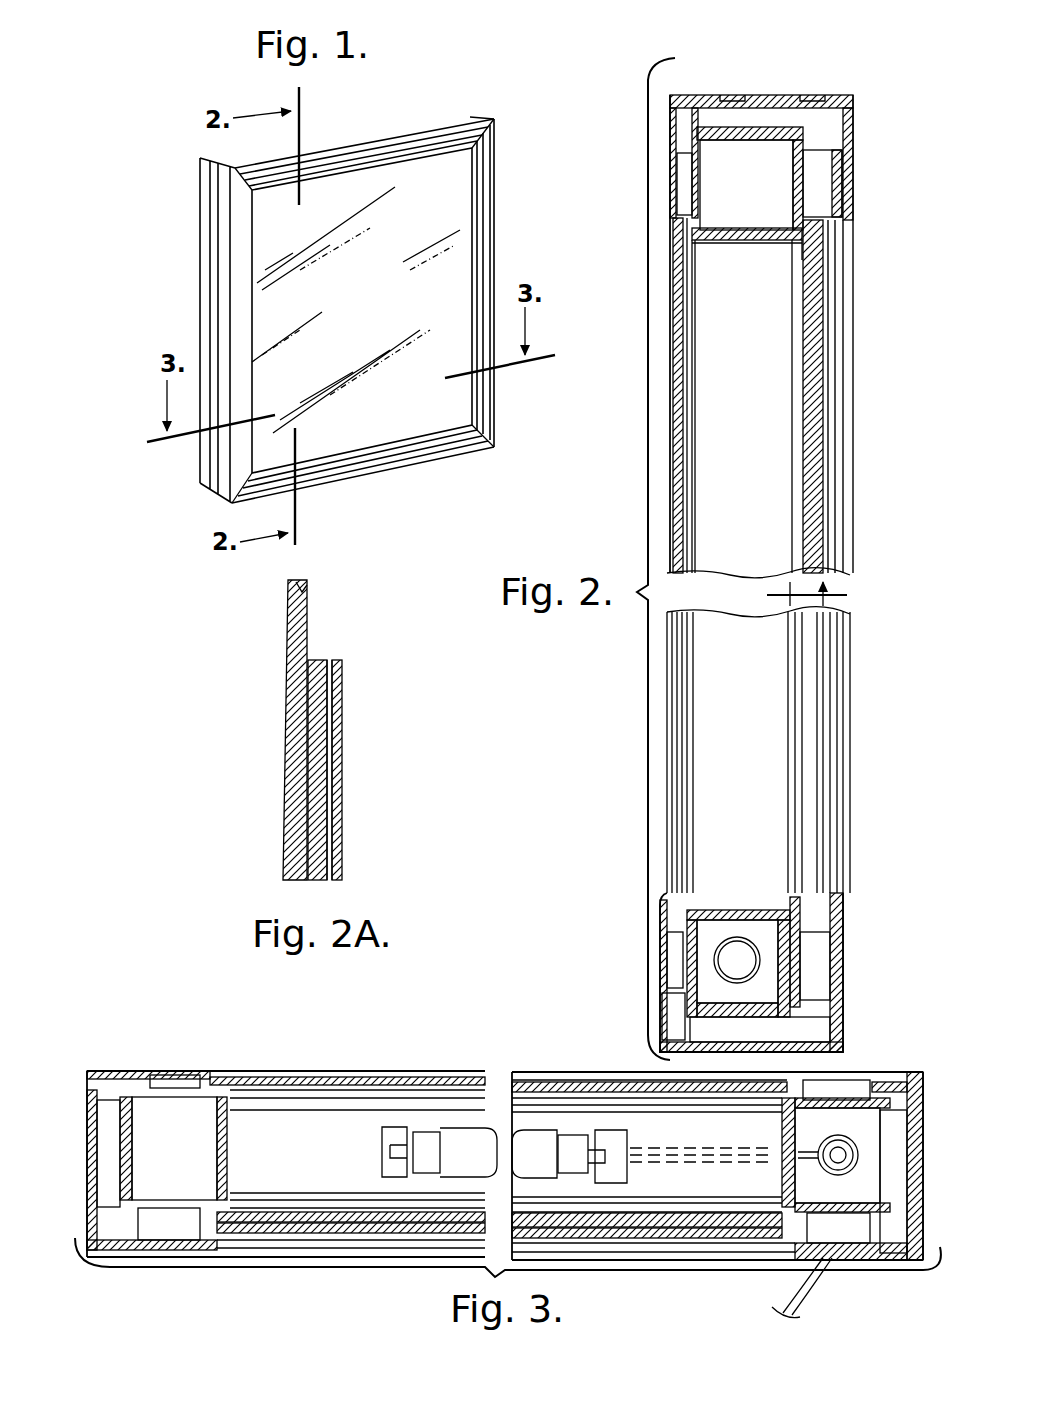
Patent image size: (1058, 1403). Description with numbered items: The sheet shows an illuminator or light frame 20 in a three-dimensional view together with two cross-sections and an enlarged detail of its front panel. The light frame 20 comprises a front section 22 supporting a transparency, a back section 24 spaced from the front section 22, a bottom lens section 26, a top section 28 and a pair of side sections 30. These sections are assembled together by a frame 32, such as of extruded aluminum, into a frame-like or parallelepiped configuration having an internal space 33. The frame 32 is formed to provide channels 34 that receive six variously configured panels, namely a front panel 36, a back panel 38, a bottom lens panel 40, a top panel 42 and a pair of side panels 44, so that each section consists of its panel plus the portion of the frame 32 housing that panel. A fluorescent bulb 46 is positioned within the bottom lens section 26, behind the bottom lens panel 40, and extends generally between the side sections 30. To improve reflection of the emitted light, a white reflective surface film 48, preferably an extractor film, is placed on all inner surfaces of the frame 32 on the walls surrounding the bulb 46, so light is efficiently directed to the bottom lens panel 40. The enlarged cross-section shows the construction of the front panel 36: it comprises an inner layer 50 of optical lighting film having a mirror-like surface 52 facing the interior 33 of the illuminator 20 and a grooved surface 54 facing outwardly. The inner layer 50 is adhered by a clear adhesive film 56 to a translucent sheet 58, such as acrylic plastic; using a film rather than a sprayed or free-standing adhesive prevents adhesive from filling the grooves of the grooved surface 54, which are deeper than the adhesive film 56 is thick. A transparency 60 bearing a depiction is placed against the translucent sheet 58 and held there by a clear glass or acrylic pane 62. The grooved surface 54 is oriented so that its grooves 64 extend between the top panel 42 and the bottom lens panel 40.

In FIG. 1, the illuminator or light frame 20 is at (339, 289).
In FIG. 2, the illuminator or light frame 20 is at (755, 548).
In FIG. 3, the illuminator or light frame 20 is at (511, 1167).
In FIG. 1, the front section 22 is at (373, 309).
In FIG. 2, the front section 22 is at (860, 387).
In FIG. 3, the front section 22 is at (364, 1260).
In FIG. 2, the back section 24 is at (666, 429).
In FIG. 3, the back section 24 is at (439, 1070).
In FIG. 1, the bottom lens section 26 is at (417, 472).
In FIG. 2, the bottom lens section 26 is at (755, 1063).
In FIG. 1, the top section 28 is at (357, 133).
In FIG. 2, the top section 28 is at (759, 92).
In FIG. 1, the side sections 30 is at (197, 230).
In FIG. 2, the side sections 30 is at (758, 811).
In FIG. 3, the side sections 30 is at (104, 1172).
In FIG. 2, the frame 32 is at (656, 974).
In FIG. 3, the frame 32 is at (150, 1072).
In FIG. 2, the internal space 33 is at (750, 501).
In FIG. 2, the channels 34 is at (787, 227).
In FIG. 3, the channels 34 is at (230, 1080).
In FIG. 2, the front panel 36 is at (803, 365).
In FIG. 2A, the front panel 36 is at (369, 765).
In FIG. 3, the front panel 36 is at (307, 1213).
In FIG. 2, the back panel 38 is at (692, 470).
In FIG. 3, the back panel 38 is at (292, 1097).
In FIG. 2, the bottom lens panel 40 is at (734, 912).
In FIG. 2, the top panel 42 is at (740, 247).
In FIG. 2, the side panels 44 is at (720, 727).
In FIG. 3, the side panels 44 is at (257, 1163).
In FIG. 2, the fluorescent bulb 46 is at (737, 960).
In FIG. 3, the fluorescent bulb 46 is at (481, 1164).
In FIG. 2, the white reflective surface film 48 is at (703, 948).
In FIG. 3, the white reflective surface film 48 is at (686, 1189).
In FIG. 2A, the inner layer of SOLF 50 is at (353, 640).
In FIG. 2A, the mirror-like surface 52 is at (287, 813).
In FIG. 2A, the grooved surface 54 is at (314, 592).
In FIG. 2A, the clear adhesive film 56 is at (330, 867).
In FIG. 2A, the translucent sheet 58 is at (320, 747).
In FIG. 2A, the transparency 60 is at (327, 675).
In FIG. 2A, the clear glass or acrylic pane 62 is at (337, 707).
In FIG. 2A, the grooves 64 is at (257, 610).